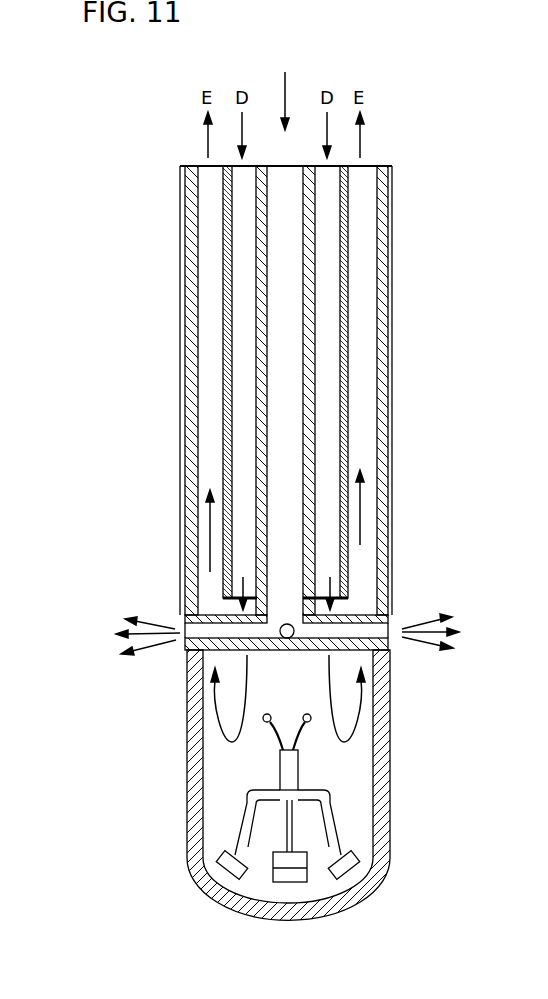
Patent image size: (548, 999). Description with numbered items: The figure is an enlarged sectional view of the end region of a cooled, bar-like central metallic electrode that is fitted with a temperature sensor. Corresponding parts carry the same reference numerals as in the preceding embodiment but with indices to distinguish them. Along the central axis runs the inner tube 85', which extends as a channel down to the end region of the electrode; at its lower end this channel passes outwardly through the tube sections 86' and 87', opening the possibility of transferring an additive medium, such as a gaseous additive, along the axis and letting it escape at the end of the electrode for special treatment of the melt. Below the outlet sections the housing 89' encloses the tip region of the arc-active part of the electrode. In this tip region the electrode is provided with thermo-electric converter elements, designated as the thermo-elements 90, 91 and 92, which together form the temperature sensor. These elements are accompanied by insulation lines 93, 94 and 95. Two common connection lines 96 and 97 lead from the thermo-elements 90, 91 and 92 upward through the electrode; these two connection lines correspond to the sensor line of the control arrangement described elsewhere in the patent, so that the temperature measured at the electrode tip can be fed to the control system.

The inner tube 85' is at (343, 390).
The tube section 86' is at (176, 654).
The tube section 87' is at (408, 650).
The combustion chamber housing 89' is at (258, 785).
The thermo-electric converter element 90 is at (228, 870).
The thermo-electric converter element 91 is at (292, 877).
The thermo-electric converter element 92 is at (352, 868).
The insulation line 93 is at (247, 830).
The insulation line 94 is at (290, 830).
The insulation line 95 is at (328, 818).
The connection line 96 is at (268, 714).
The connection line 97 is at (309, 722).